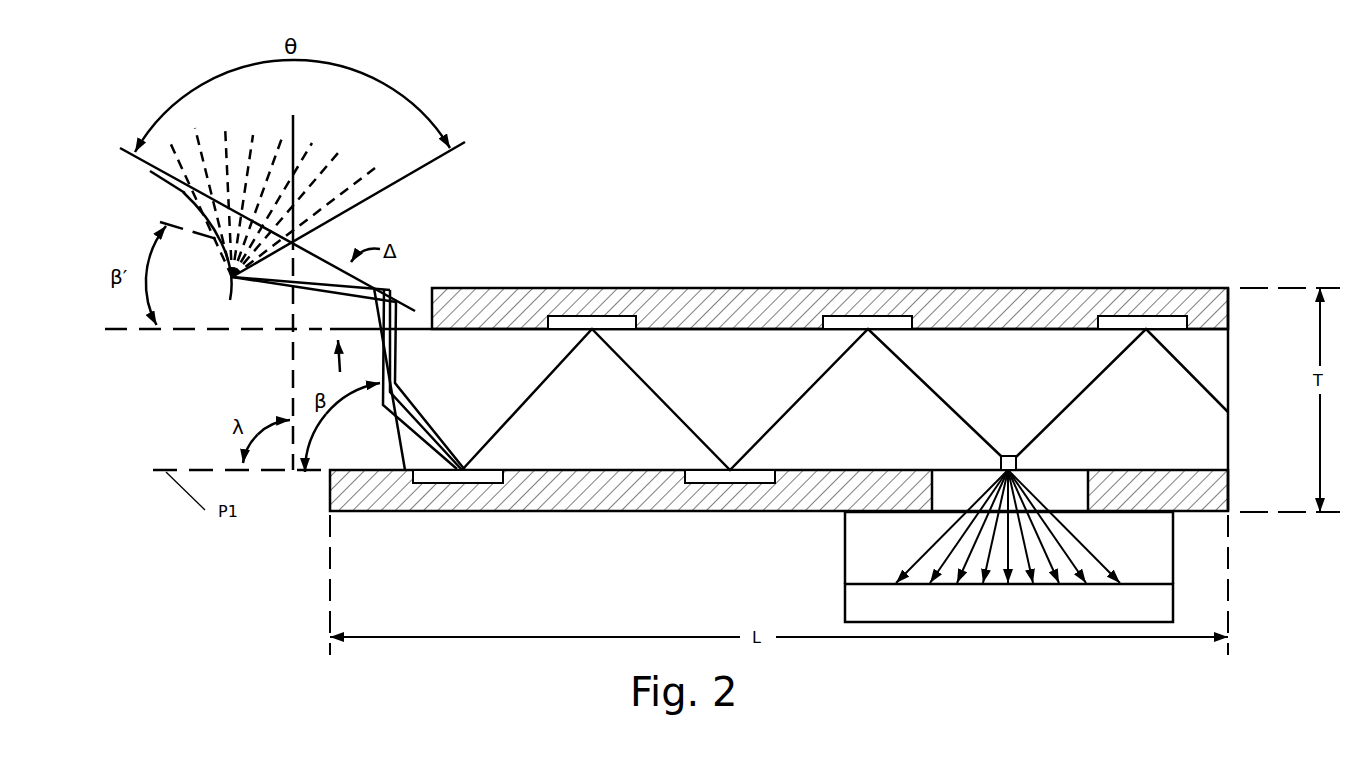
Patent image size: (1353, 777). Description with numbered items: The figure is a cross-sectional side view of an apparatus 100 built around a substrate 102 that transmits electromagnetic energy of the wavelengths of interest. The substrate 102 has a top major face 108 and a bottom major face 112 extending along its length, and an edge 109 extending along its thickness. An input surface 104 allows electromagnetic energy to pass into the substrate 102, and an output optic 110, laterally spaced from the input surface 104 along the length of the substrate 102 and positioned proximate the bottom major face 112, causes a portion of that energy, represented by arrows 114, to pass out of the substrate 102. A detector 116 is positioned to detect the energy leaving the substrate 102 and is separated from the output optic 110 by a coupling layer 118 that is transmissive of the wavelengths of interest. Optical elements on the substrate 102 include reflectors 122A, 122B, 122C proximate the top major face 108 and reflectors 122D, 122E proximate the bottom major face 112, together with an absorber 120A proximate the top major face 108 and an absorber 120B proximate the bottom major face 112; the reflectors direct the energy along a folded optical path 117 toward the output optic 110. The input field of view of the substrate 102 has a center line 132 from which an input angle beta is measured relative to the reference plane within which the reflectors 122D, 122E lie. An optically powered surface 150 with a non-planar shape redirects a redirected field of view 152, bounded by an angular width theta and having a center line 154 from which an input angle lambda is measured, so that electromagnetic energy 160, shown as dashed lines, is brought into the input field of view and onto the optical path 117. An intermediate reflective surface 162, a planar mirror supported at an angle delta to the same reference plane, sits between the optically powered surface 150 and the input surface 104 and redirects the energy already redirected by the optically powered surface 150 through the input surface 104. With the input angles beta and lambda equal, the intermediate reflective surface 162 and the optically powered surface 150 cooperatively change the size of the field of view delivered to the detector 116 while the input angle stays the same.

The apparatus 100 is at (798, 111).
The substrate 102 is at (809, 399).
The input surface 104 is at (419, 344).
The top major face 108 is at (830, 343).
The edge 109 is at (1258, 399).
The output optic 110 is at (1024, 434).
The bottom major face 112 is at (1158, 477).
The arrows 114 is at (1024, 526).
The detector 116 is at (980, 603).
The optical path 117 is at (845, 399).
The coupling layer 118 is at (980, 548).
The absorber 120A is at (845, 299).
The absorber 120B is at (779, 509).
The reflector 122A is at (623, 287).
The reflector 122B is at (902, 287).
The reflector 122C is at (1178, 287).
The reflector 122D is at (489, 508).
The reflector 122E is at (697, 508).
The center line 132 is at (348, 373).
The optically powered surface 150 is at (169, 235).
The redirected field of view 152 is at (376, 209).
The center line 154 is at (259, 279).
The electromagnetic energy 160 is at (304, 207).
The intermediate reflective surface 162 is at (306, 229).